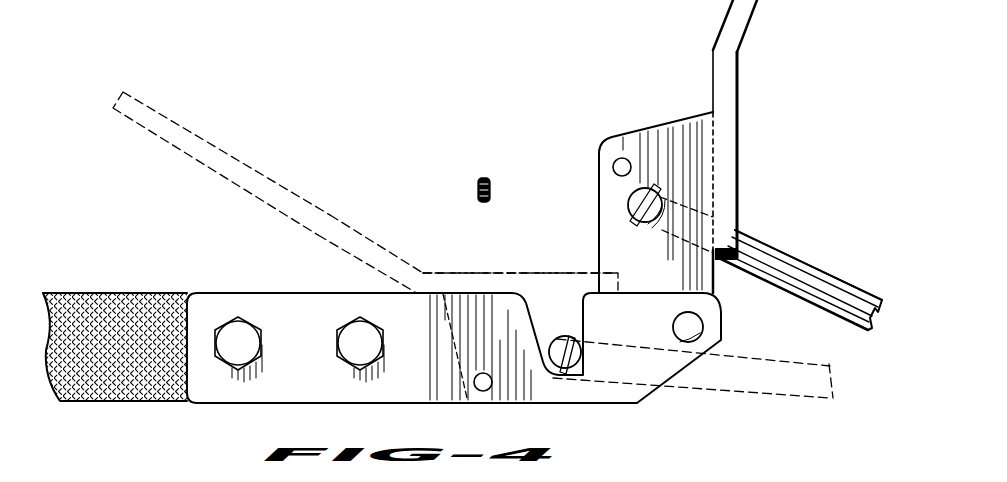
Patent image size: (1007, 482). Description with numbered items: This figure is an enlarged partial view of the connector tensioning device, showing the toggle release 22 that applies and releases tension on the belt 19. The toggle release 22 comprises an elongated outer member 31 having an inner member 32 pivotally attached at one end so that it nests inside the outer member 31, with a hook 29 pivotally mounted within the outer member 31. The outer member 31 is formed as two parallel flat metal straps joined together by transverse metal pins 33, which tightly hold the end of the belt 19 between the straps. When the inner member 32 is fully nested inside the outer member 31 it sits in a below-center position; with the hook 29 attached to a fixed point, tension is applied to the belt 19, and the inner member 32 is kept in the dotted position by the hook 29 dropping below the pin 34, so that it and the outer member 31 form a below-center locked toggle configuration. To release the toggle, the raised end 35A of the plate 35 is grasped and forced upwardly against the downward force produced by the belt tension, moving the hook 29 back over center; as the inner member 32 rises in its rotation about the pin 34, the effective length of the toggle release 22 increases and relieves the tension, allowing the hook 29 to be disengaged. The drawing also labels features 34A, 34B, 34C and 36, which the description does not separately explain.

The belt 19 is at (150, 300).
The toggle release 22 is at (245, 283).
The hook 29 is at (822, 270).
The outer member 31 is at (243, 392).
The inner member 32 is at (600, 215).
The transverse metal pins 33 is at (346, 345).
The pin 34 is at (700, 328).
The adjusting screw 34A is at (572, 318).
The hole 34B is at (617, 163).
The hole 34C is at (475, 392).
The plate 35 is at (496, 275).
The raised end of plate 35A is at (270, 183).
The pin 36 is at (492, 182).